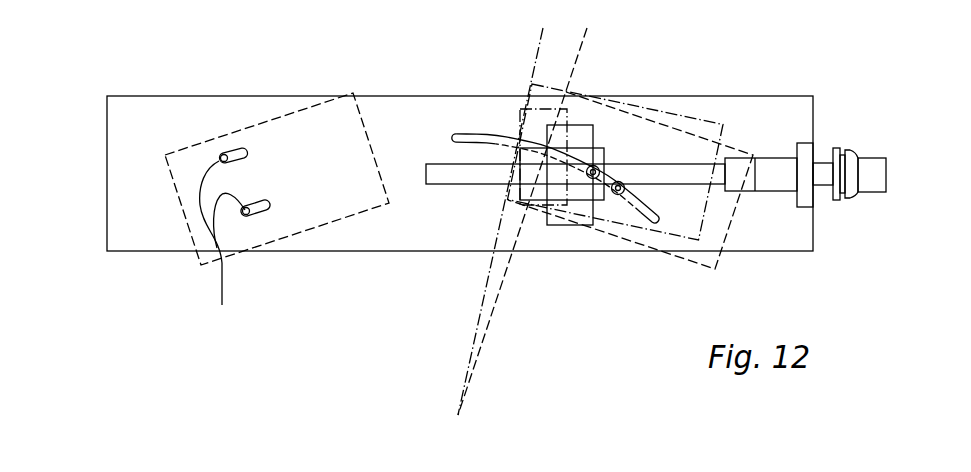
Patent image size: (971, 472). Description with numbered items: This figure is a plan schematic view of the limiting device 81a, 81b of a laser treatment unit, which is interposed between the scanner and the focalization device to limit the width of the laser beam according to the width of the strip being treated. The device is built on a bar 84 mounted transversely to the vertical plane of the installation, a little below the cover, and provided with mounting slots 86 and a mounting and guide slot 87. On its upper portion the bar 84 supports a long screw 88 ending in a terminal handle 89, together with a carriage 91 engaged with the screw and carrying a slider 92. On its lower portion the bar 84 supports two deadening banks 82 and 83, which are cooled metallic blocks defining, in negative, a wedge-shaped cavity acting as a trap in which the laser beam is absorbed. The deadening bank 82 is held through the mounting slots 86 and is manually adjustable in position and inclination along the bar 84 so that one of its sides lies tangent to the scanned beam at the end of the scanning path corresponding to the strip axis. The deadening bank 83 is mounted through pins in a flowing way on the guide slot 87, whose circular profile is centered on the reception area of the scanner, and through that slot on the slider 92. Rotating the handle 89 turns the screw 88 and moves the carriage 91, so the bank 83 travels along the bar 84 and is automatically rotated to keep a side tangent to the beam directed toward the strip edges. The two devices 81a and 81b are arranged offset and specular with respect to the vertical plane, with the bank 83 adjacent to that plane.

The limiting device 81a is at (534, 150).
The limiting device 81b is at (495, 163).
The deadening bank 82 is at (305, 130).
The deadening bank 83 is at (713, 258).
The bar 84 is at (812, 111).
The mounting slots 86 is at (222, 247).
The mounting and guide slot 87 is at (488, 142).
The long screw 88 is at (467, 177).
The terminal handle 89 is at (868, 183).
The carriage 91 is at (600, 133).
The slider 92 is at (551, 225).